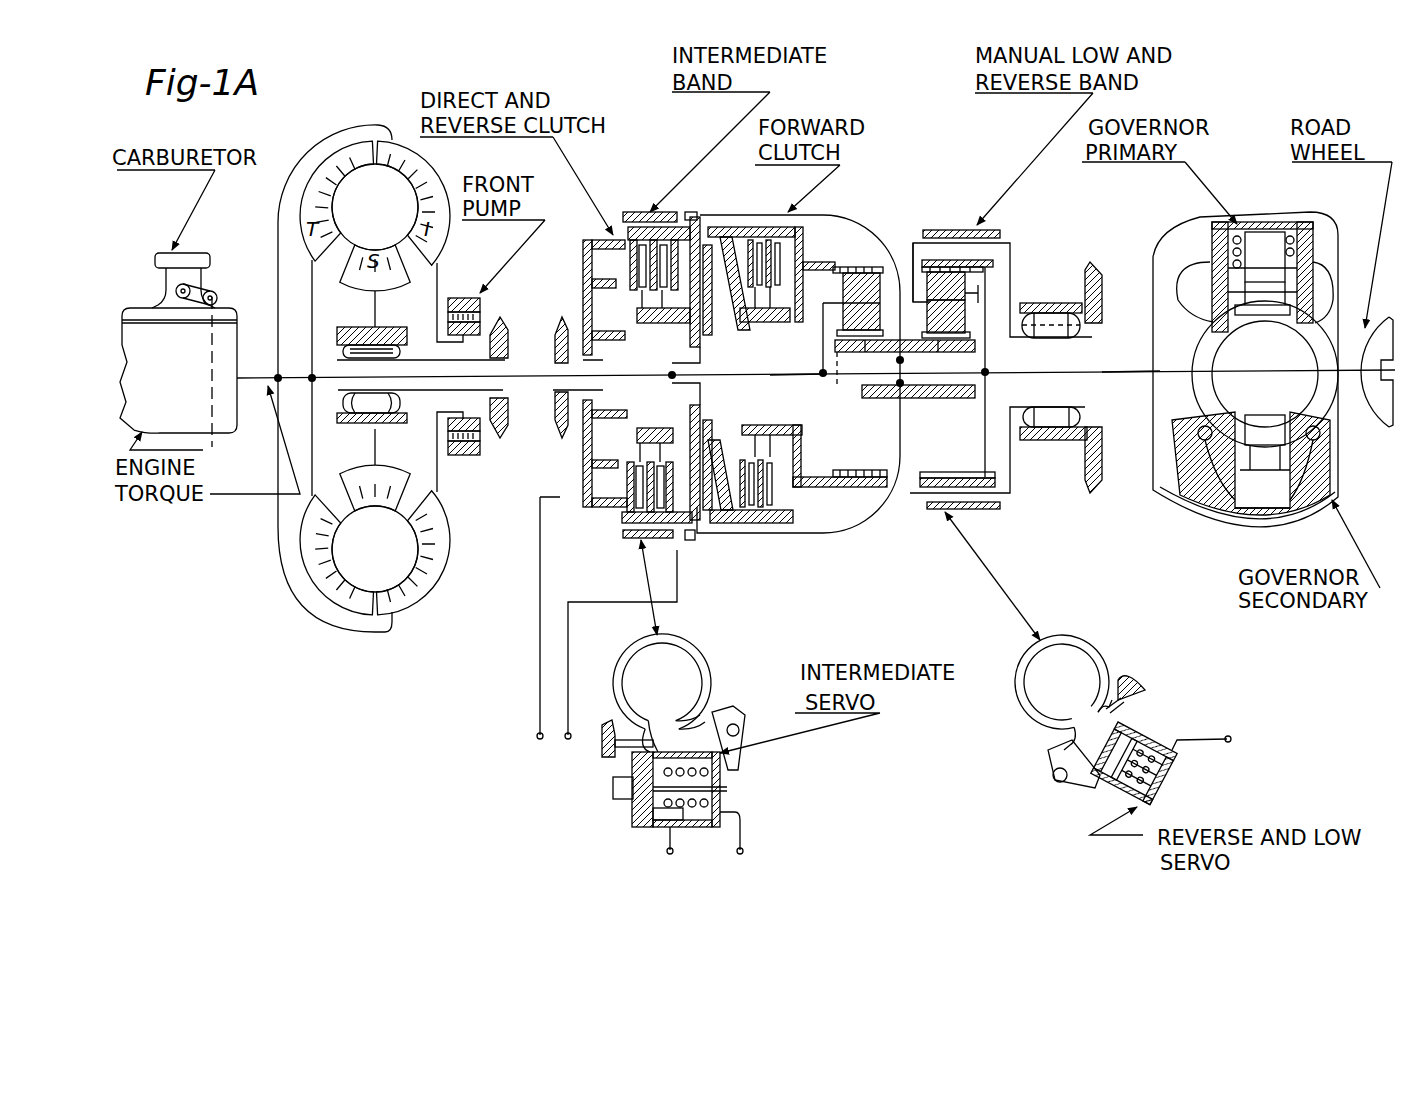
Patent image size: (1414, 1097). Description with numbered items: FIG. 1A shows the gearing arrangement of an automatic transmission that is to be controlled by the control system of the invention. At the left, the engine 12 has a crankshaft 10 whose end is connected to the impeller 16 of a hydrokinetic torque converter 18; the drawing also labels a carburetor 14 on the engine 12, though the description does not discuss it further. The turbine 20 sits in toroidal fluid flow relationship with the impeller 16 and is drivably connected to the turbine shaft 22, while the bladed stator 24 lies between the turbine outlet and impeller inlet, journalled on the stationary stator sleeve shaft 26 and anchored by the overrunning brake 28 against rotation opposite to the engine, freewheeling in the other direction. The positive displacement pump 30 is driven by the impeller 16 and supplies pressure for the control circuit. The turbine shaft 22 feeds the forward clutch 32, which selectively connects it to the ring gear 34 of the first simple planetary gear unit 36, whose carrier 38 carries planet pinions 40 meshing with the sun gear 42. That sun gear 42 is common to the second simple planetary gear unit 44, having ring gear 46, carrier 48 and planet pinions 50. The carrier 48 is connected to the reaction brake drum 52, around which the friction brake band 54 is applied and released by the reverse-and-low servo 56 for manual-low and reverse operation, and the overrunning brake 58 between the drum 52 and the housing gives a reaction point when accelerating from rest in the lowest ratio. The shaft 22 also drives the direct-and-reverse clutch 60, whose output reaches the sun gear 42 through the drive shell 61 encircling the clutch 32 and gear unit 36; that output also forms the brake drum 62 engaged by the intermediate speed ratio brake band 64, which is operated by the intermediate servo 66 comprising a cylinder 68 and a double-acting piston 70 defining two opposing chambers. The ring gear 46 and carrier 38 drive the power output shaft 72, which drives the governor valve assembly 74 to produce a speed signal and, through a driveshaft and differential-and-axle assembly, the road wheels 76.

The crankshaft 10 is at (253, 356).
The engine 12 is at (233, 338).
The carburetor 14 is at (204, 283).
The impeller 16 is at (430, 176).
The hydrokinetic torque converter 18 is at (332, 150).
The turbine 20 is at (300, 205).
The turbine shaft 22 is at (522, 372).
The bladed stator 24 is at (385, 292).
The stationary stator sleeve shaft 26 is at (483, 352).
The overrunning brake 28 is at (367, 328).
The positive displacement pump 30 is at (472, 295).
The forward clutch 32 is at (775, 252).
The ring gear 34 is at (872, 262).
The first simple planetary gear unit 36 is at (913, 240).
The carrier 38 is at (770, 377).
The planet pinions 40 is at (835, 312).
The sun gear 42 is at (938, 400).
The second simple planetary gear unit 44 is at (970, 288).
The ring gear 46 is at (1005, 240).
The carrier 48 is at (958, 265).
The planet pinions 50 is at (963, 318).
The reaction brake drum 52 is at (950, 228).
The friction brake band 54 is at (1097, 652).
The reverse-and-low servo 56 is at (1156, 728).
The overrunning brake 58 is at (1062, 343).
The direct-and-reverse clutch 60 is at (620, 262).
The drive shell 61 is at (853, 535).
The brake drum 62 is at (628, 210).
The intermediate speed ratio brake band 64 is at (633, 537).
The intermediate servo 66 is at (630, 765).
The cylinder 68 is at (723, 763).
The double-acting piston 70 is at (660, 828).
The power output shaft 72 is at (1102, 372).
The governor valve assembly 74 is at (1225, 300).
The road wheels 76 is at (1373, 412).